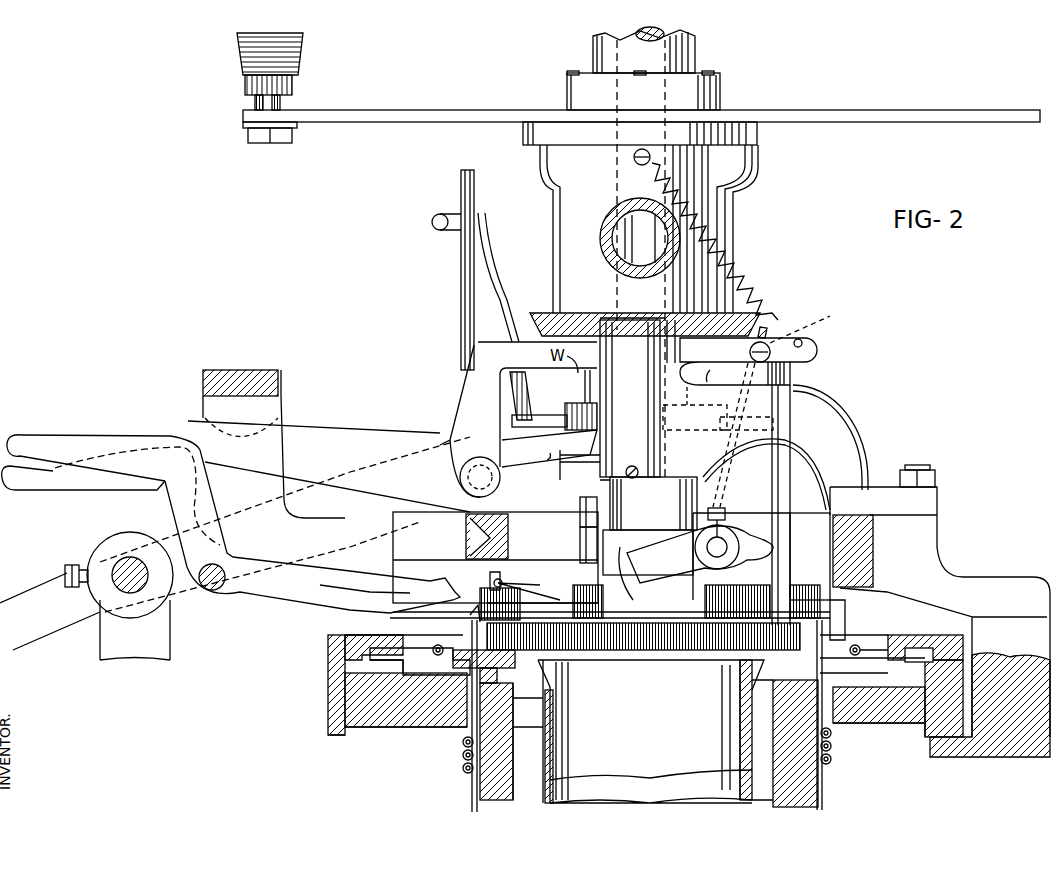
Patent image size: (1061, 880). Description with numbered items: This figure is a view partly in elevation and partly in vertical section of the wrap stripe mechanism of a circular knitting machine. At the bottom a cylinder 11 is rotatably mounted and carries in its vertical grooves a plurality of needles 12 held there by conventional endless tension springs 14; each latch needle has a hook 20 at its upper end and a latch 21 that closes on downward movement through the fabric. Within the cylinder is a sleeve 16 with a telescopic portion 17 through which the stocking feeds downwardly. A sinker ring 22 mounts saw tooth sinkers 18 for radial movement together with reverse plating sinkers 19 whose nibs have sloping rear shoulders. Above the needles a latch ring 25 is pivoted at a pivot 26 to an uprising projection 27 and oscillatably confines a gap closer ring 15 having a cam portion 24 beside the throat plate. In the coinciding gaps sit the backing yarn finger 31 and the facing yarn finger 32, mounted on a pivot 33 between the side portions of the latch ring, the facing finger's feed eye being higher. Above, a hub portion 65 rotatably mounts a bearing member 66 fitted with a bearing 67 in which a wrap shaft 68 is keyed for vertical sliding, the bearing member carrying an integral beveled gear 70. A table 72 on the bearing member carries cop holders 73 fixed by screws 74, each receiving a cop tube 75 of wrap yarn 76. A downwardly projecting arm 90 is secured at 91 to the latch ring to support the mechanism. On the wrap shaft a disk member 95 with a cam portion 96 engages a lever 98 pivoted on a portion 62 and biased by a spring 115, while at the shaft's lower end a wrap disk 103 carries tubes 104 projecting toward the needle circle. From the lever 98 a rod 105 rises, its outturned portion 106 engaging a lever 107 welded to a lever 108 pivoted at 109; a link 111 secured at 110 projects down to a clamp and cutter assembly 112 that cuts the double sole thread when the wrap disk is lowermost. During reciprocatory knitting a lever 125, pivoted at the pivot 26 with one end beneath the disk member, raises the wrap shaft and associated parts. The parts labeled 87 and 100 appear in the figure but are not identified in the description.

The cylinder 11 is at (782, 800).
The needles 12 is at (473, 790).
The endless tension springs 14 is at (462, 743).
The gap closer ring 15 is at (806, 513).
The sleeve 16 is at (555, 800).
The telescopic portion 17 is at (742, 670).
The saw tooth sinkers 18 is at (853, 645).
The reverse plating sinkers 19 is at (440, 646).
The hook 20 is at (496, 584).
The latch 21 is at (826, 615).
The sinker ring 22 is at (328, 650).
The cam portion 24 is at (488, 514).
The latch ring 25 is at (938, 540).
The pivot 26 is at (125, 582).
The projection 27 is at (203, 395).
The backing yarn feed finger 31 is at (300, 585).
The facing yarn feed finger 32 is at (332, 556).
The pivot 33 is at (222, 588).
The portion 62 is at (568, 490).
The hub portion 65 is at (748, 168).
The bearing member 66 is at (760, 135).
The bearing 67 is at (698, 50).
The wrap shaft 68 is at (665, 33).
The beveled gear 70 is at (574, 313).
The table 72 is at (492, 109).
The cop holders 73 is at (283, 100).
The screws 74 is at (295, 134).
The cop tube 75 is at (245, 85).
The wrap yarn 76 is at (238, 62).
The lugs 87 is at (573, 71).
The arm 90 is at (845, 428).
The securing point 91 is at (910, 468).
The disk member 95 is at (565, 398).
The cam portion 96 is at (556, 415).
The lever 98 is at (738, 438).
The spring 100 is at (758, 285).
The wrap disk 103 is at (580, 515).
The tubes 104 is at (580, 536).
The rod 105 is at (505, 322).
The outturned portion 106 is at (455, 215).
The lever 107 is at (477, 215).
The lever 108 is at (814, 348).
The pivot 109 is at (487, 457).
The securing point 110 is at (822, 320).
The link 111 is at (725, 500).
The clamp and cutter assembly 112 is at (680, 575).
The spring 115 is at (768, 424).
The lever 125 is at (553, 456).